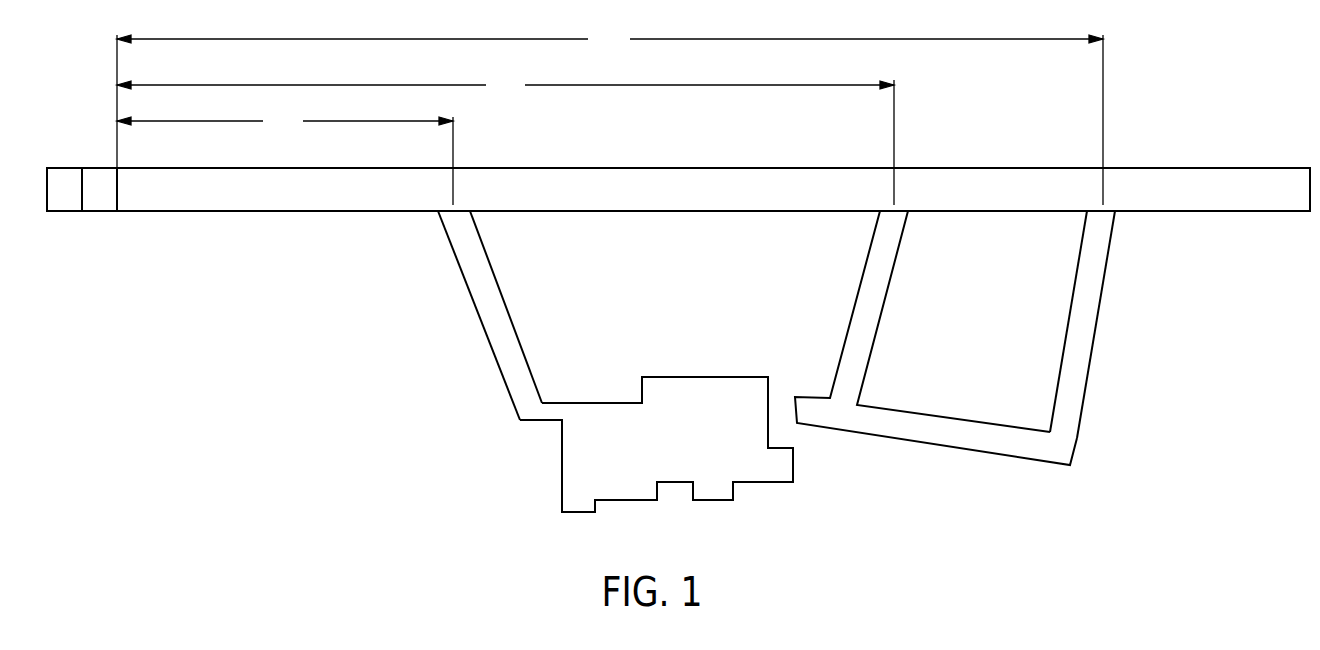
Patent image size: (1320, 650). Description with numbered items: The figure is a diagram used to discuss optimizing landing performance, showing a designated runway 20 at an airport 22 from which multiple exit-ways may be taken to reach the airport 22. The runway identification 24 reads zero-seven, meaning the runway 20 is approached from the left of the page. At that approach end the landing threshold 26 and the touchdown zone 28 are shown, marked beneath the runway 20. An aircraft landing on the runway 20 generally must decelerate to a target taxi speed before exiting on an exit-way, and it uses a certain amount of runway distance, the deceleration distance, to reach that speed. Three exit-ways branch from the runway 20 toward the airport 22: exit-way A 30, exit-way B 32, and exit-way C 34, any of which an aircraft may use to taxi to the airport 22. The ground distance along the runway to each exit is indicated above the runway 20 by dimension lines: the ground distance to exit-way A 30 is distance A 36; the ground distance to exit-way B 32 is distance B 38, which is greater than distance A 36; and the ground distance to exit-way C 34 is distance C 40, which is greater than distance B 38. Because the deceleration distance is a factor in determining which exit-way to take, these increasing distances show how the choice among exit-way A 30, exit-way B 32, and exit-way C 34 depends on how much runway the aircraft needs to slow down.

The runway 20 is at (1190, 168).
The airport 22 is at (695, 393).
The runway identification 24 is at (98, 167).
The landing threshold 26 is at (82, 217).
The touchdown zone 28 is at (117, 273).
The exit-way A 30 is at (462, 280).
The exit-way B 32 is at (860, 280).
The exit-way C 34 is at (1073, 280).
The distance A 36 is at (285, 155).
The distance B 38 is at (505, 137).
The distance C 40 is at (610, 115).